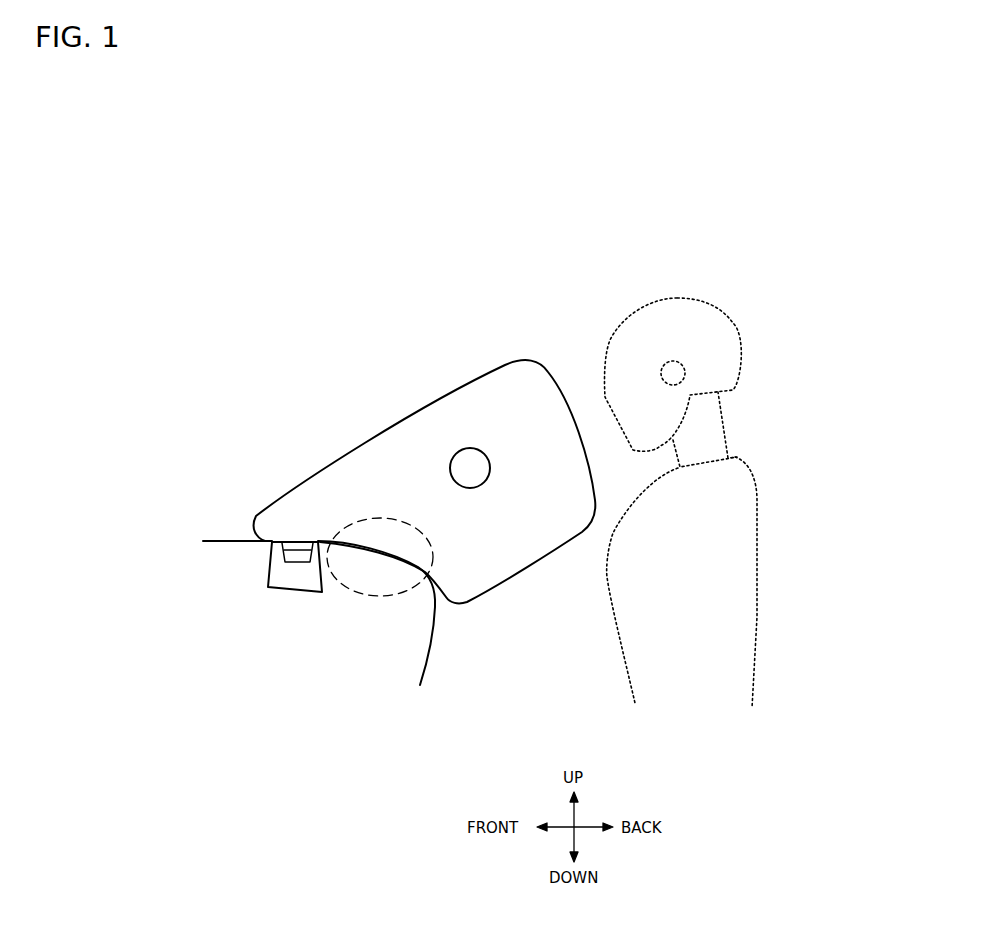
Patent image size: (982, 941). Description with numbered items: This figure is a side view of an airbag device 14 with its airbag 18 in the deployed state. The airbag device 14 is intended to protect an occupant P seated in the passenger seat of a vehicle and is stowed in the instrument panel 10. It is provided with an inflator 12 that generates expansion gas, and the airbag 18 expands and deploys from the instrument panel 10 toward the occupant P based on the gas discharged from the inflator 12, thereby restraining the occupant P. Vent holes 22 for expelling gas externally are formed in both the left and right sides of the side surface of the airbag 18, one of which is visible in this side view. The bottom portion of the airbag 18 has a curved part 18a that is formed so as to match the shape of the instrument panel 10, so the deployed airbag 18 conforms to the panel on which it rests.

The instrument panel 10 is at (225, 545).
The inflator 12 is at (293, 553).
The airbag device 14 is at (425, 496).
The airbag 18 is at (482, 373).
The curved part 18a is at (372, 588).
The vent holes 22 is at (467, 488).
The occupant P is at (677, 298).